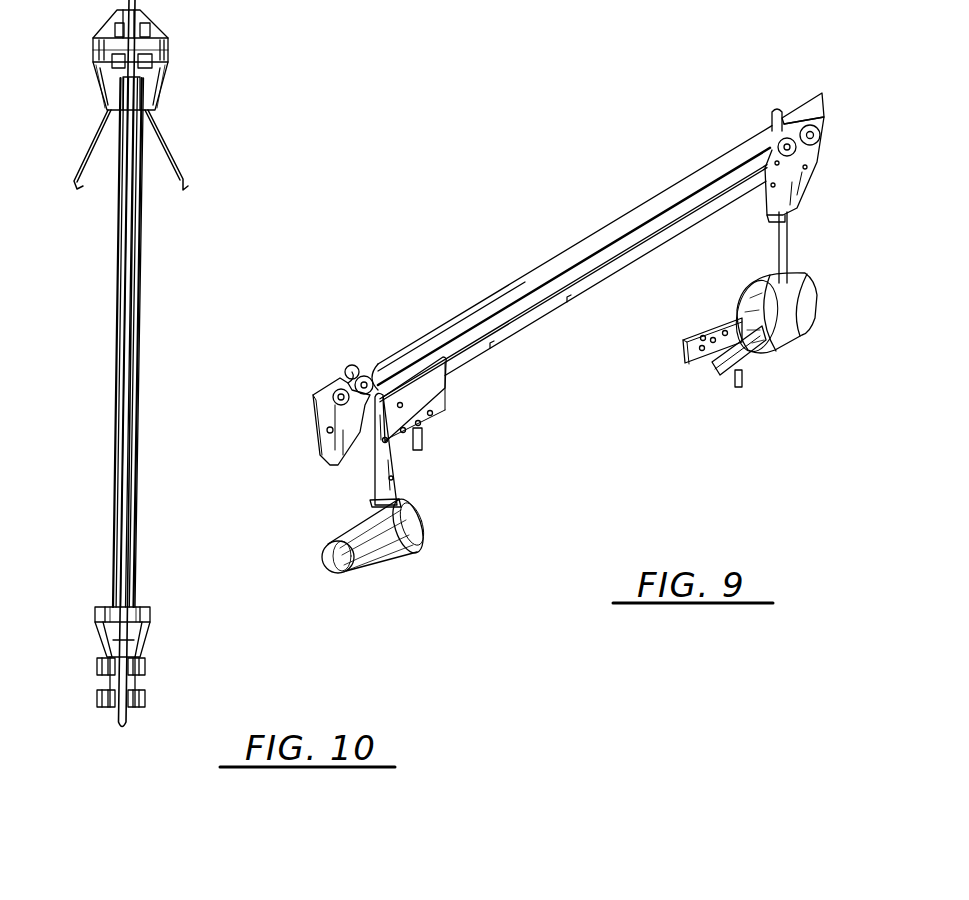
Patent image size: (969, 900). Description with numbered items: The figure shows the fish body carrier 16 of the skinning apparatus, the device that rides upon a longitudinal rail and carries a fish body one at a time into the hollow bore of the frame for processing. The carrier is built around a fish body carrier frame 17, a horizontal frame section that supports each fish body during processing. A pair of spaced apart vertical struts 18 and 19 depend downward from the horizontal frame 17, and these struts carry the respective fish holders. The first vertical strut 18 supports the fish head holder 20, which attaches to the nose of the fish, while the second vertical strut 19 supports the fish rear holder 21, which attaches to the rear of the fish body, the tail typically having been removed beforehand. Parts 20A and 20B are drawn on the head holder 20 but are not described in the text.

In FIG. 10, the fish body carrier 16 is at (137, 353).
In FIG. 9, the fish body carrier 16 is at (565, 255).
In FIG. 9, the fish body carrier frame 17 is at (412, 345).
In FIG. 9, the vertical strut 18 is at (793, 250).
In FIG. 9, the vertical strut 19 is at (373, 498).
In FIG. 10, the fish head holder 20 is at (168, 80).
In FIG. 9, the fish head holder 20 is at (818, 312).
In FIG. 10, the hanger arm 20A is at (74, 183).
In FIG. 9, the hanger arm 20A is at (690, 350).
In FIG. 10, the hanger arm 20B is at (186, 175).
In FIG. 9, the hanger arm 20B is at (712, 372).
In FIG. 10, the fish rear holder 21 is at (150, 607).
In FIG. 9, the fish rear holder 21 is at (372, 563).